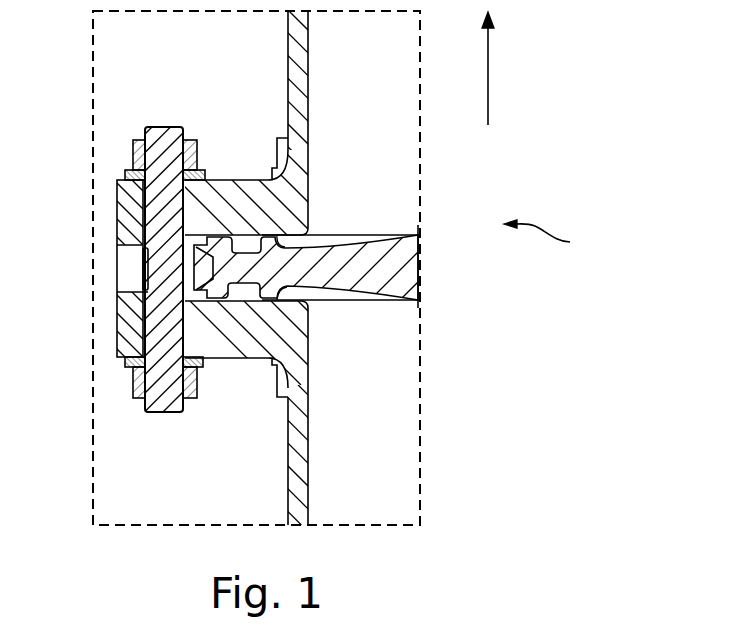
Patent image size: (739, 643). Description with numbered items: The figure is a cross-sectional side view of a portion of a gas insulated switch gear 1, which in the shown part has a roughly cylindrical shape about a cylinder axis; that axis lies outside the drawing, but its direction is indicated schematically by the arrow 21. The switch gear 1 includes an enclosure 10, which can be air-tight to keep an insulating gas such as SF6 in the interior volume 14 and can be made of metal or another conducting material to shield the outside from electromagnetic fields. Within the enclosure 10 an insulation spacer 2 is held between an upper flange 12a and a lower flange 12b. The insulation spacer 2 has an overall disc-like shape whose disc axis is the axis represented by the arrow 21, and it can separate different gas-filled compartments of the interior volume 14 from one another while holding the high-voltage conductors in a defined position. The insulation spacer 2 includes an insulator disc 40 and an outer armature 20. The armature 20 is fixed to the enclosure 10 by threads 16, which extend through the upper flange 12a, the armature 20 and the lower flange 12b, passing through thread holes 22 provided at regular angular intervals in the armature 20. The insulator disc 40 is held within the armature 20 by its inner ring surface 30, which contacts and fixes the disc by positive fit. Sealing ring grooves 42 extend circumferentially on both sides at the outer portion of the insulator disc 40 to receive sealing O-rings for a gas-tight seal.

The gas insulated switch gear 1 is at (125, 54).
The insulation spacer 2 is at (548, 238).
The enclosure 10 is at (300, 80).
The upper flange 12a is at (279, 204).
The lower flange 12b is at (247, 342).
The interior volume 14 is at (402, 72).
The threads 16 is at (148, 400).
The outer armature 20 is at (133, 268).
The arrow indicating cylinder axis 21 is at (488, 72).
The thread holes 22 is at (138, 257).
The inner ring surface 30 is at (140, 303).
The insulator disc 40 is at (378, 267).
The sealing ring grooves 42 is at (301, 303).